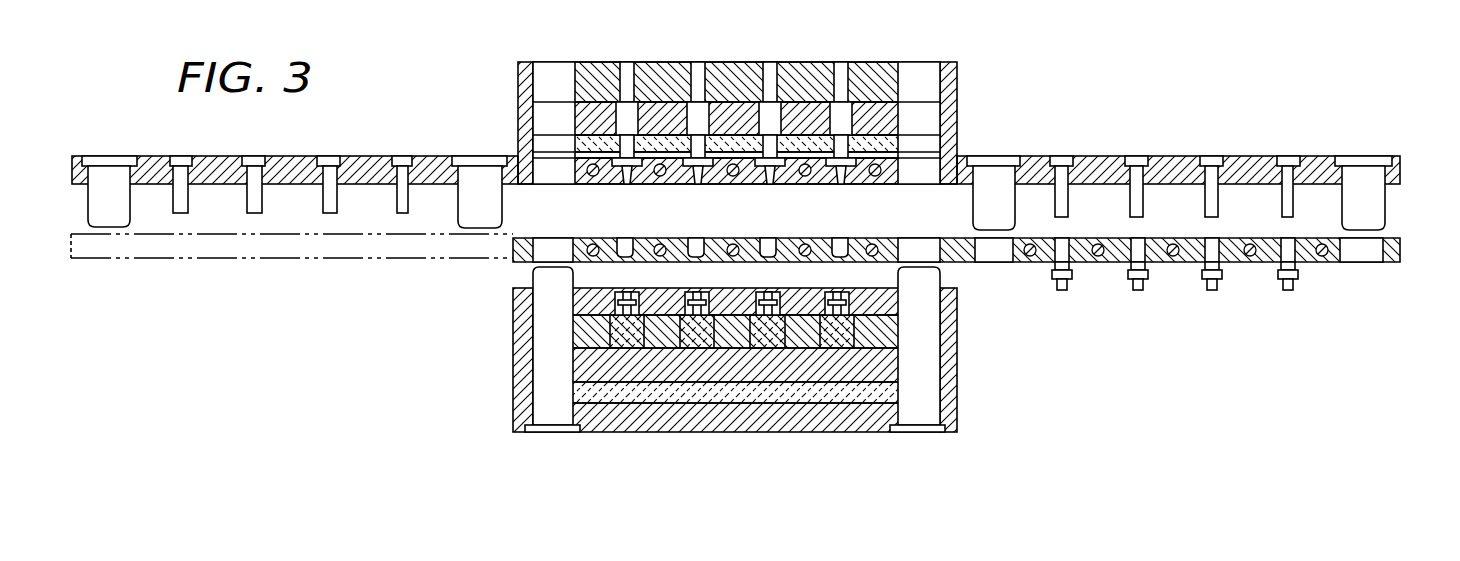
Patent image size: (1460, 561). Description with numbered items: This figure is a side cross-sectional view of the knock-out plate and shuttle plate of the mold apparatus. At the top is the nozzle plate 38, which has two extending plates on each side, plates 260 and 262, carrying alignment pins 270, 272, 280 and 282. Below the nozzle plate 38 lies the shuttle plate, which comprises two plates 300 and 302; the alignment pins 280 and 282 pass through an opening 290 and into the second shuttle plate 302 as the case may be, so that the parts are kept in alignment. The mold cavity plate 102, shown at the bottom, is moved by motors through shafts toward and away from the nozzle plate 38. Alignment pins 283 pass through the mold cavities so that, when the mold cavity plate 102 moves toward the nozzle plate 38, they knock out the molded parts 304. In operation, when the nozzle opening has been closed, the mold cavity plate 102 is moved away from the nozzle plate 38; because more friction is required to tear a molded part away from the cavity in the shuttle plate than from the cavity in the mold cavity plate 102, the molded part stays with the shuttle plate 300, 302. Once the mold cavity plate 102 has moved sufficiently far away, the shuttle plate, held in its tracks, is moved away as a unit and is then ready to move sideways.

The nozzle plate 38 is at (880, 186).
The mold cavity plate 102 is at (966, 353).
The extending plate 260 is at (358, 157).
The extending plate 262 is at (1176, 157).
The alignment pin 270 is at (100, 204).
The alignment pin 272 is at (475, 210).
The alignment pin 280 is at (987, 207).
The alignment pin 282 is at (1356, 213).
The alignment pin 283 is at (1213, 194).
The opening 290 is at (1010, 263).
The shuttle plate 300 is at (552, 231).
The second shuttle plate 302 is at (1388, 237).
The molded part 304 is at (1134, 287).